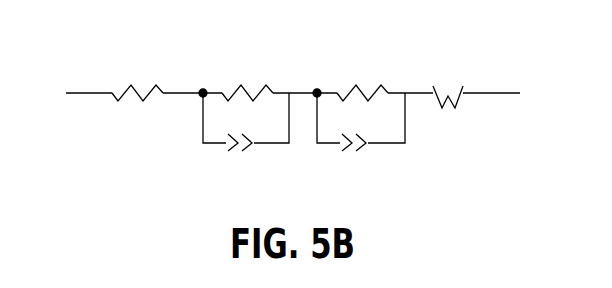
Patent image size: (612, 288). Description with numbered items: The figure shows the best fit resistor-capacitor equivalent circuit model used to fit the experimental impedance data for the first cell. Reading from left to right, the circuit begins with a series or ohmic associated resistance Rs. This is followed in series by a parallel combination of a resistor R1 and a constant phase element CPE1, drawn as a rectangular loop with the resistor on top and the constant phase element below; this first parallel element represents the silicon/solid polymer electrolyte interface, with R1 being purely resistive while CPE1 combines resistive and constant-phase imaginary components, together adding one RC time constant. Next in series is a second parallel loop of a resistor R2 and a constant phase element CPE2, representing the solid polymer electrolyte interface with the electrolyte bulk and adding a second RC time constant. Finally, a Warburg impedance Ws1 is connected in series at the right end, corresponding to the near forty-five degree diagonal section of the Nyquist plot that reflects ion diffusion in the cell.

The series or ohmic associated resistance Rs is at (137, 75).
The resistor R1 is at (247, 75).
The resistor R2 is at (362, 75).
The constant phase element CPE1 is at (246, 122).
The constant phase element CPE2 is at (361, 122).
The Warburg impedance Ws1 is at (449, 80).